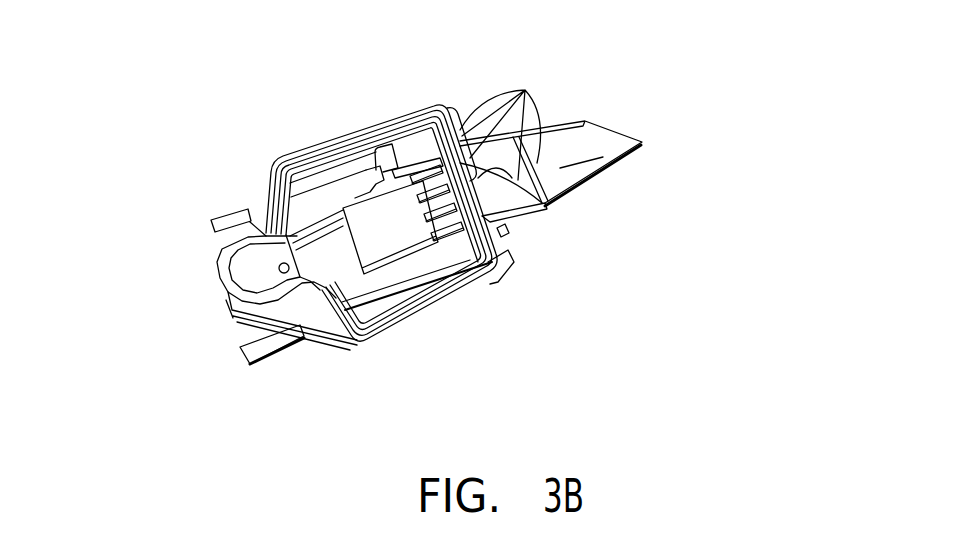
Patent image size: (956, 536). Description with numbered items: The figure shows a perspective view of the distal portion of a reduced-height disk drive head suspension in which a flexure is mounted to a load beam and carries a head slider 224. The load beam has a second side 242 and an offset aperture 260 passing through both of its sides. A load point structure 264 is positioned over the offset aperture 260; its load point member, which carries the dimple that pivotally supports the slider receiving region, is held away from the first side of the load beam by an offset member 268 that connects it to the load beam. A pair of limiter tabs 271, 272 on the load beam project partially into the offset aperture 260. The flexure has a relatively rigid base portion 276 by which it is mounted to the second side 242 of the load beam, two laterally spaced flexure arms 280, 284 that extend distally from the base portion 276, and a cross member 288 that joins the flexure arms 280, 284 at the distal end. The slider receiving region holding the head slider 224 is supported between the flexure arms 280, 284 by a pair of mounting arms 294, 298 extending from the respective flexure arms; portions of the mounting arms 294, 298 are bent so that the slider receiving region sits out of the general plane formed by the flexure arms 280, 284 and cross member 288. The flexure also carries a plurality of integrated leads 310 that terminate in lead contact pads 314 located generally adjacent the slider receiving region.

The head slider 224 is at (428, 318).
The second side 242 is at (620, 157).
The offset aperture 260 is at (343, 272).
The load point structure 264 is at (313, 211).
The offset member 268 is at (275, 300).
The limiter tab 271 is at (274, 160).
The limiter tab 272 is at (361, 334).
The base portion 276 is at (230, 305).
The flexure arm 280 is at (340, 162).
The flexure arm 284 is at (367, 292).
The cross member 288 is at (508, 251).
The mounting arm 294 is at (460, 117).
The mounting arm 298 is at (498, 272).
The integrated leads 310 is at (311, 137).
The lead contact pads 314 is at (525, 90).